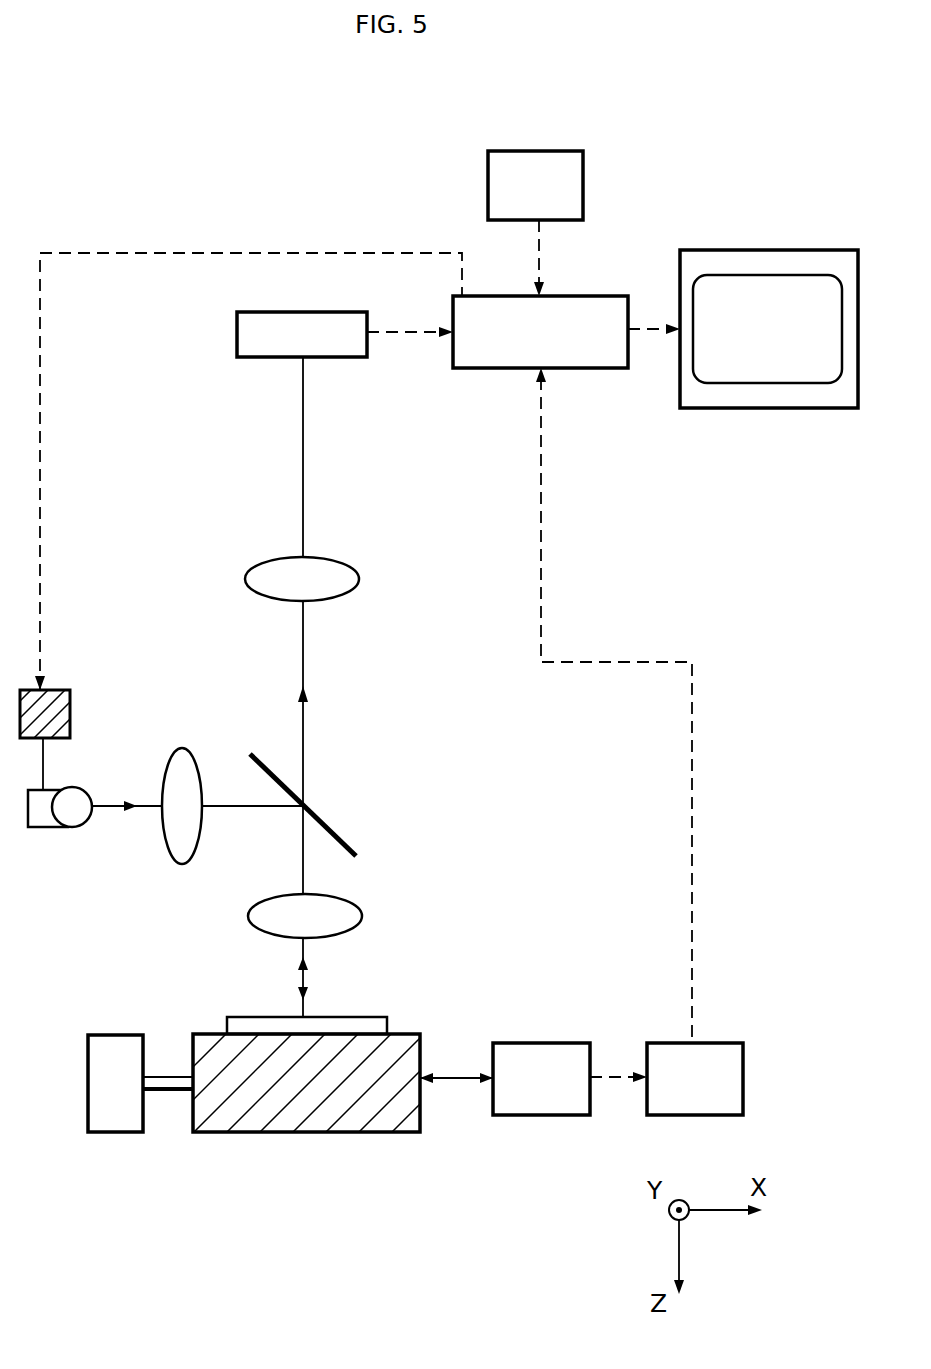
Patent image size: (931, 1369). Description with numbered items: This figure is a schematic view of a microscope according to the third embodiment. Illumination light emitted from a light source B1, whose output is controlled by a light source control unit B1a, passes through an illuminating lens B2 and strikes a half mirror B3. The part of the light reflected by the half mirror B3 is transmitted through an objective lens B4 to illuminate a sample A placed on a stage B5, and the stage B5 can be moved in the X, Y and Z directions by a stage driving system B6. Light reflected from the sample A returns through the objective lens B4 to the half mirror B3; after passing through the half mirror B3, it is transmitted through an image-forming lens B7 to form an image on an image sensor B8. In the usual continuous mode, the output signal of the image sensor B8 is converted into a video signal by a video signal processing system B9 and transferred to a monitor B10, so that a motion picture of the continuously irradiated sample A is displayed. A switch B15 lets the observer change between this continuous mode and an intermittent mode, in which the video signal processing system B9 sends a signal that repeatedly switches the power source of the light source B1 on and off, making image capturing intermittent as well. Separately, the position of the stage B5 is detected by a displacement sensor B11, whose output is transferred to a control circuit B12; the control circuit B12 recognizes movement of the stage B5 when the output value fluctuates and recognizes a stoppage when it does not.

The light source B1 is at (75, 818).
The light source control unit B1a is at (70, 708).
The illuminating lens B2 is at (183, 850).
The half mirror B3 is at (350, 843).
The objective lens B4 is at (360, 912).
The stage B5 is at (330, 1132).
The stage driving system B6 is at (111, 1035).
The image-forming lens B7 is at (348, 580).
The image sensor B8 is at (248, 332).
The video signal processing system B9 is at (482, 357).
The monitor B10 is at (781, 250).
The displacement sensor B11 is at (545, 1043).
The control circuit B12 is at (724, 1043).
The switch B15 is at (583, 168).
The sample A is at (386, 1022).